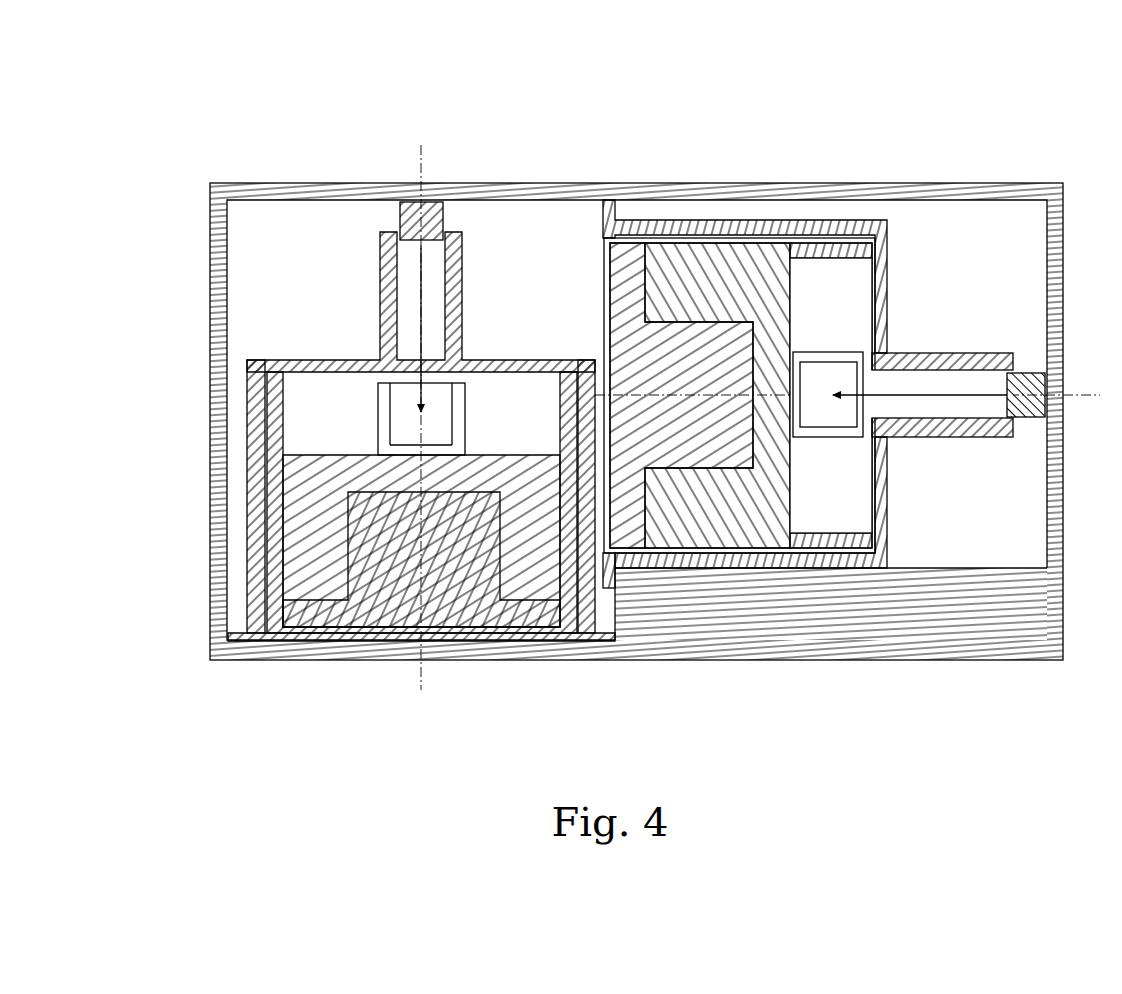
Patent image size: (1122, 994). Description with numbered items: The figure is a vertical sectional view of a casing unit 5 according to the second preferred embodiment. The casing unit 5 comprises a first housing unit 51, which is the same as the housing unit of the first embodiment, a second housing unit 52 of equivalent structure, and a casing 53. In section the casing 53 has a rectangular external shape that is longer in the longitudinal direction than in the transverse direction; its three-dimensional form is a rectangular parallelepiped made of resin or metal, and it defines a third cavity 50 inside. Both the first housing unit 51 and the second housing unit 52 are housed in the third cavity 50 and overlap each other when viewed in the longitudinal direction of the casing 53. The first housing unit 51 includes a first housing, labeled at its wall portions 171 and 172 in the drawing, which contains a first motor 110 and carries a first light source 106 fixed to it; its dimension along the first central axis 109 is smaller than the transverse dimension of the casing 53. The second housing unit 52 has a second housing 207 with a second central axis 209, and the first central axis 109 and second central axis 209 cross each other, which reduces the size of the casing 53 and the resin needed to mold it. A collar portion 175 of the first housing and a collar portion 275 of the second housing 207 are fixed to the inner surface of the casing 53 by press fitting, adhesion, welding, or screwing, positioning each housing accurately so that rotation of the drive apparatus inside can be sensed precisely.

The casing unit 5 is at (698, 140).
The third cavity 50 is at (1005, 272).
The first housing unit 51 is at (476, 328).
The second housing unit 52 is at (899, 326).
The casing 53 is at (300, 190).
The first light source 106 is at (444, 224).
The first central axis 109 is at (418, 181).
The first motor 110 is at (488, 618).
The inner cup 171 is at (384, 298).
The outer cup 172 is at (252, 414).
The collar portion 175 is at (611, 640).
The second housing 207 is at (880, 290).
The second central axis 209 is at (1077, 396).
The collar portion 275 is at (617, 584).